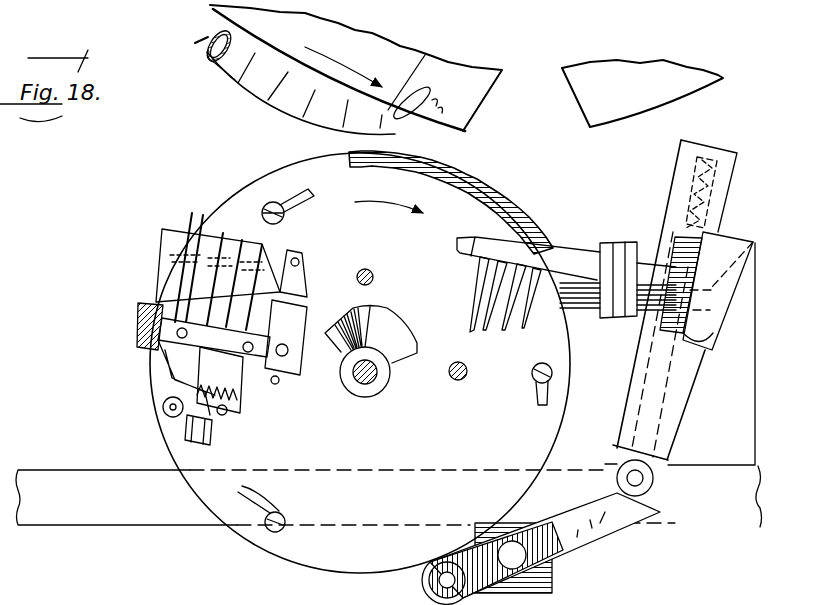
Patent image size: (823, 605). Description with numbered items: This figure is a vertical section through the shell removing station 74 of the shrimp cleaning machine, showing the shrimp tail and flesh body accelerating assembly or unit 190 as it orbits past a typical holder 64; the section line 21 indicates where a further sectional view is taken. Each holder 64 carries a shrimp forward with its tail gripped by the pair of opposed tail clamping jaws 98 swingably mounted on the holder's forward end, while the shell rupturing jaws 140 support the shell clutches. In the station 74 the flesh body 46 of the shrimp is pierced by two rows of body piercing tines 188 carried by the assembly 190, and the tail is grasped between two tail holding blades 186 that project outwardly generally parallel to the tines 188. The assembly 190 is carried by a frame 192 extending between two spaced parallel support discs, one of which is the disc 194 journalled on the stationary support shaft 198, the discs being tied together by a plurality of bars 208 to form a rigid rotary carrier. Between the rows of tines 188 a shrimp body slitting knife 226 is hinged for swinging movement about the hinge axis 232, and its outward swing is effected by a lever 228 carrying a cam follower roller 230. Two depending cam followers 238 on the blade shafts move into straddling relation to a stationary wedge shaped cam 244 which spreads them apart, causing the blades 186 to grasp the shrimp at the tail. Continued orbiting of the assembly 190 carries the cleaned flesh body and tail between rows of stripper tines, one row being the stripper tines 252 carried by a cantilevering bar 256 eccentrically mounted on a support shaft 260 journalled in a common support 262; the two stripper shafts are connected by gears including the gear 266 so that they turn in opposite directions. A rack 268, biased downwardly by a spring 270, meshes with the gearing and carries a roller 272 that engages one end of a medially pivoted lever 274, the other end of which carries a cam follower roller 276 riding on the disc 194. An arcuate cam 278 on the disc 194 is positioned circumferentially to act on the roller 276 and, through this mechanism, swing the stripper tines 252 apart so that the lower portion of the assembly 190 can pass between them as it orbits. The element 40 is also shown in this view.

The section line 21 is at (151, 198).
The blade mounting lug 40 is at (204, 44).
The flesh body 46 is at (213, 38).
The holder 64 is at (594, 58).
The shell removing station 74 is at (283, 123).
The tail clamping jaws 98 is at (472, 100).
The shell rupturing jaws 140 is at (478, 71).
The tail holding blades 186 is at (298, 275).
The body piercing tines 188 is at (208, 228).
The shrimp tail and flesh body accelerating assembly 190 is at (262, 398).
The frame 192 is at (147, 347).
The support disc 194 is at (297, 549).
The stationary support shaft 198 is at (366, 385).
The bars 208 is at (374, 276).
The shrimp body slitting knife 226 is at (165, 253).
The lever 228 is at (167, 371).
The cam follower roller 230 is at (170, 406).
The hinge axis 232 is at (288, 348).
The cam followers 238 is at (197, 432).
The wedge shaped cam 244 is at (393, 327).
The stripper tines 252 is at (528, 301).
The cantilevering bar 256 is at (565, 250).
The support shaft 260 is at (760, 236).
The common support 262 is at (720, 248).
The gear 266 is at (713, 333).
The rack 268 is at (668, 421).
The spring 270 is at (732, 188).
The roller 272 is at (656, 489).
The medially pivoted lever 274 is at (605, 537).
The cam follower roller 276 is at (427, 587).
The arcuate cam 278 is at (489, 199).